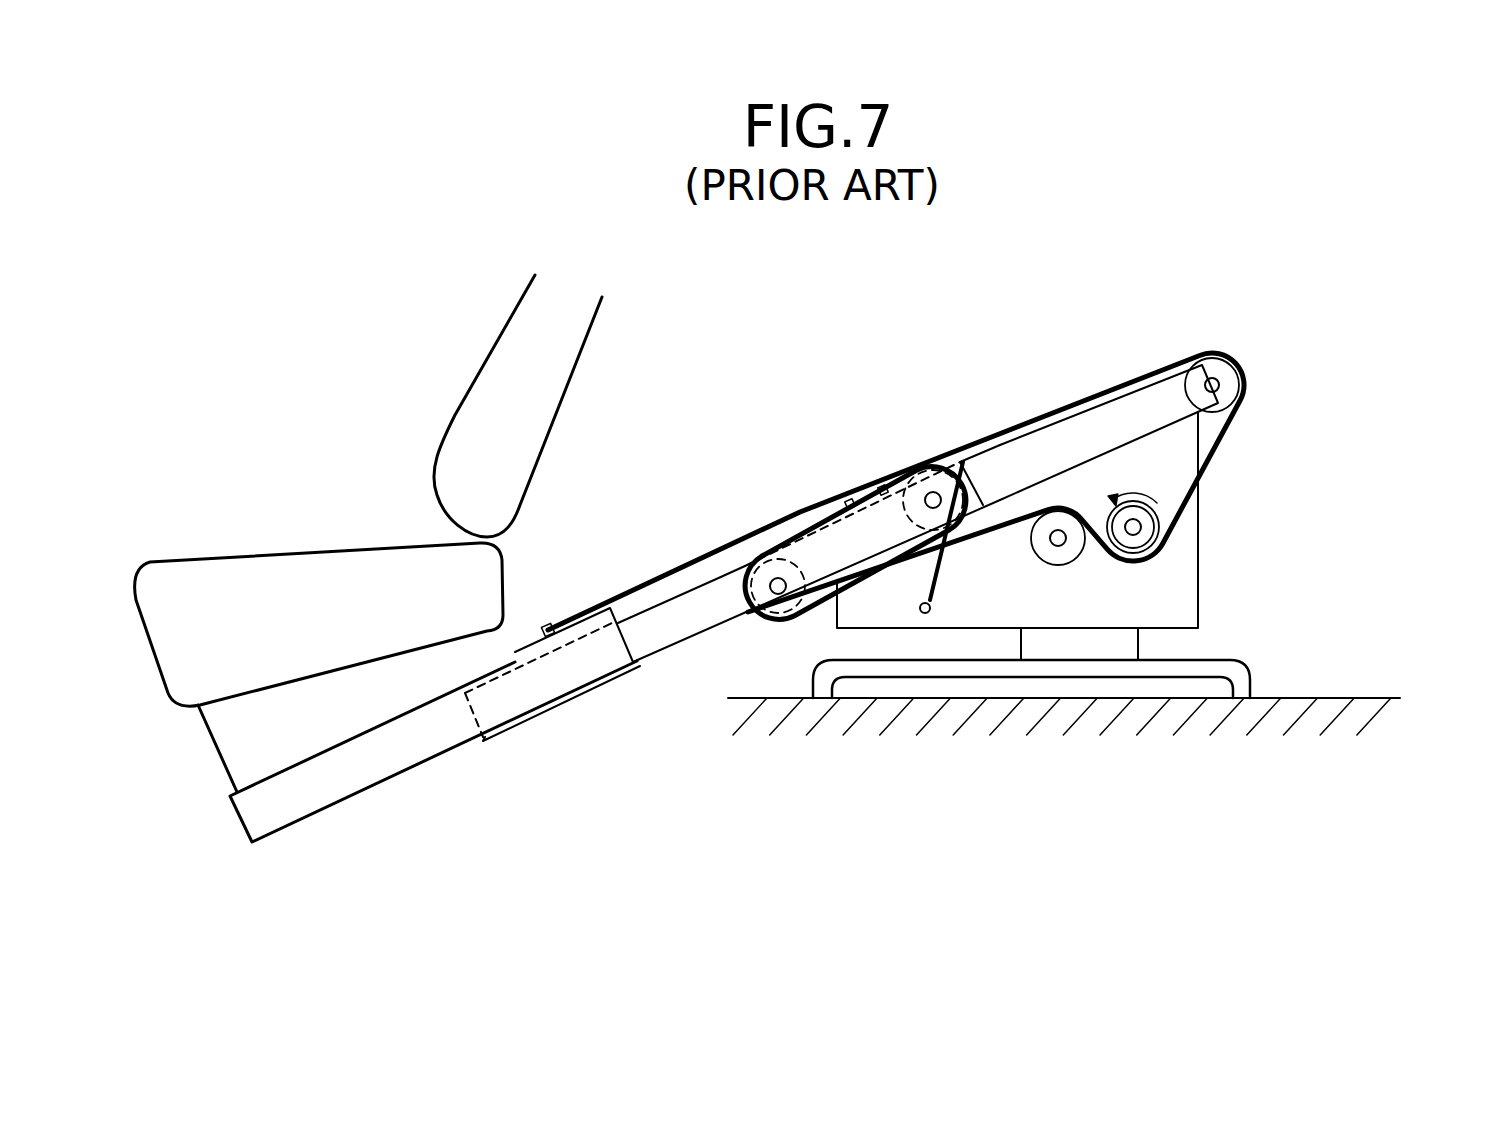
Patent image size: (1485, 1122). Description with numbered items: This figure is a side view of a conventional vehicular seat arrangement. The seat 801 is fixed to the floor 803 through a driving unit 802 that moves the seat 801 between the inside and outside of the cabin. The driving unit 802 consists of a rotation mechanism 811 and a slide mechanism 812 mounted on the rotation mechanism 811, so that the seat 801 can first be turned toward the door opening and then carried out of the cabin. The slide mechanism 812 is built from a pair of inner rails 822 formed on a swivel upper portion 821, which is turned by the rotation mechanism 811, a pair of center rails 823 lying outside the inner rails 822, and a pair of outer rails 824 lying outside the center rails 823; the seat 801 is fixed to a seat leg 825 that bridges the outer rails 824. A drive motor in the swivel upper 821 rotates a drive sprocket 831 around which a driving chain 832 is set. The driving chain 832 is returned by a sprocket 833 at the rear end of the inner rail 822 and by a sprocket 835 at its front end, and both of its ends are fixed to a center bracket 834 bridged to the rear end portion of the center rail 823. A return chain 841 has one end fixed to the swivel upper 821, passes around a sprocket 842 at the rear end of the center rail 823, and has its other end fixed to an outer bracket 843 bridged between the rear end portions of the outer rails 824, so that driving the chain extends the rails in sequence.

The seat 801 is at (425, 333).
The driving unit 802 is at (1335, 532).
The floor 803 is at (1305, 700).
The rotation mechanism 811 is at (1123, 645).
The slide mechanism 812 is at (1173, 548).
The swivel upper portion 821 is at (1198, 508).
The inner rail 822 is at (1140, 408).
The center rail 823 is at (690, 603).
The outer rail 824 is at (367, 758).
The seat leg 825 is at (247, 745).
The drive sprocket 831 is at (1200, 482).
The driving chain 832 is at (1053, 408).
The sprocket 833 is at (1243, 362).
The center bracket 834 is at (870, 478).
The sprocket 835 is at (767, 617).
The return chain 841 is at (793, 513).
The sprocket 842 is at (933, 457).
The outer bracket 843 is at (575, 613).